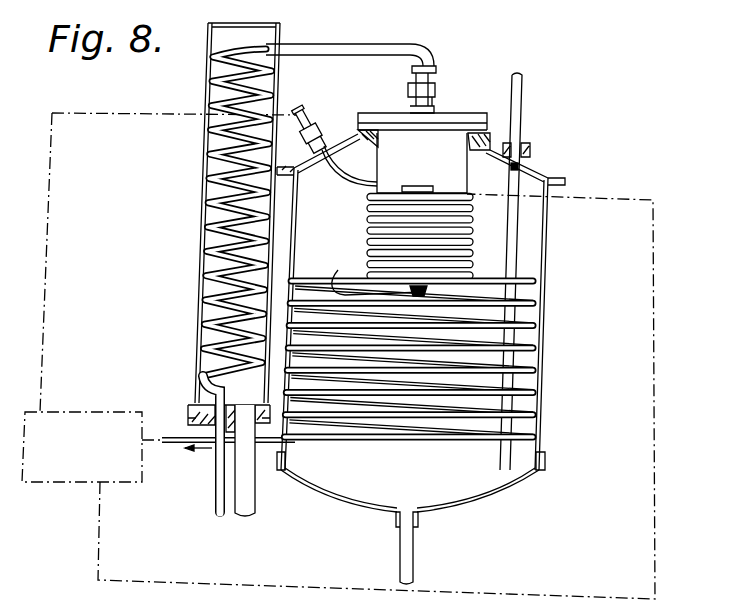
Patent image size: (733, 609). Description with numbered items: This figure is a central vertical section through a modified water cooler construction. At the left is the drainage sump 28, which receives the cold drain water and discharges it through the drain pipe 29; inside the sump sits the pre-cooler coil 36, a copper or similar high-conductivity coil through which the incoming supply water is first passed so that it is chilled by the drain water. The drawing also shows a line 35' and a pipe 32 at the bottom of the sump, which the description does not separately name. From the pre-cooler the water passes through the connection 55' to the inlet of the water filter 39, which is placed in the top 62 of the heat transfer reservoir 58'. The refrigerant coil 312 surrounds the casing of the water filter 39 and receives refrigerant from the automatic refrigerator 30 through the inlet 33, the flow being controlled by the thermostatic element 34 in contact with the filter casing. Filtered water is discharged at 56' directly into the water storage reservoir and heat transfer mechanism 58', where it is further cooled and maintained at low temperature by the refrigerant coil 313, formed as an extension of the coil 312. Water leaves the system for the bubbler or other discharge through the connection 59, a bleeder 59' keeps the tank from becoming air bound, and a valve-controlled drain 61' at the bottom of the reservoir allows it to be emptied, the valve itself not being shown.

The drainage sump 28 is at (198, 282).
The drain pipe 29 is at (255, 511).
The automatic refrigerator 30 is at (90, 448).
The inlet pipe 32 is at (174, 430).
The inlet 33 is at (294, 95).
The thermostatic element 34 is at (414, 186).
The return tube 35' is at (190, 444).
The coil 36 is at (205, 233).
The water filter 39 is at (447, 167).
The connection 55' is at (351, 78).
The filtered water discharge 56' is at (367, 273).
The heat transfer reservoir 58' is at (434, 321).
The connection 59 is at (534, 271).
The bleeder 59' is at (553, 159).
The valve-controlled drain 61' is at (435, 548).
The top 62 is at (490, 136).
The refrigerant coil 312 is at (474, 246).
The refrigerant coil 313 is at (505, 366).